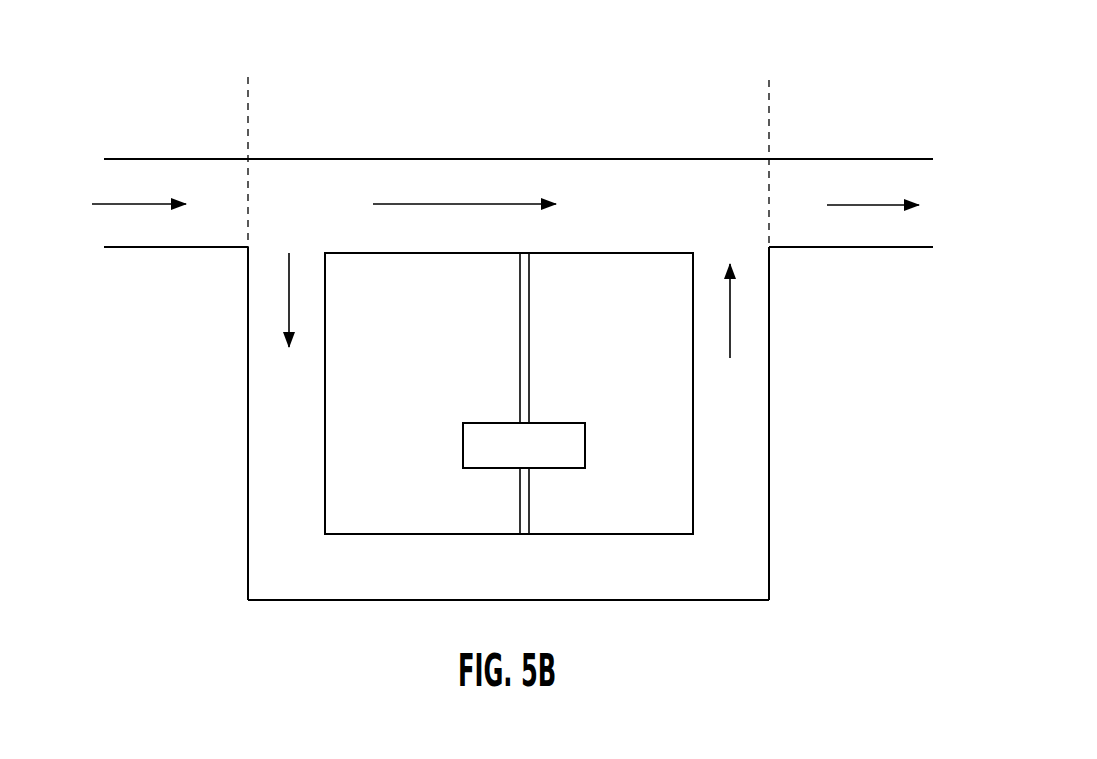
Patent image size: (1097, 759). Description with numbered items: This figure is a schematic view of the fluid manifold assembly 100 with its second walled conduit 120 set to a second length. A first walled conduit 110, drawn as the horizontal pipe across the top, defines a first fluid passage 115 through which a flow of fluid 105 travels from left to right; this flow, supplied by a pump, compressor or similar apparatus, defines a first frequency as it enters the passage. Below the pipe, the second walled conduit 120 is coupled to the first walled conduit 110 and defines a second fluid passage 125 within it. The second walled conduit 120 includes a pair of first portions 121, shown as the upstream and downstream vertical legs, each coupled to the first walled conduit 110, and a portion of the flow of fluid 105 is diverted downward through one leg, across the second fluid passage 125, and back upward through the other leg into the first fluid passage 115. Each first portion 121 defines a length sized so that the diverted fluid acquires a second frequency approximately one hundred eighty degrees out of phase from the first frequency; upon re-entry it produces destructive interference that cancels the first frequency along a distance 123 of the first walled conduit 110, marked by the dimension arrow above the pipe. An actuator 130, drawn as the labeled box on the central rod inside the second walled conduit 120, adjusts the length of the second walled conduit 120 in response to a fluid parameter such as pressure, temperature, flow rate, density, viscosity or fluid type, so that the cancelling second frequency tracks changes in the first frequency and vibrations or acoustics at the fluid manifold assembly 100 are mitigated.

The fluid manifold assembly 100 is at (723, 70).
The flow of fluid 105 is at (139, 203).
The first walled conduit 110 is at (826, 159).
The first fluid passage 115 is at (638, 215).
The second walled conduit 120 is at (413, 527).
The first portions 121 is at (335, 399).
The distance 123 is at (250, 112).
The second fluid passage 125 is at (426, 580).
The actuator 130 is at (557, 422).